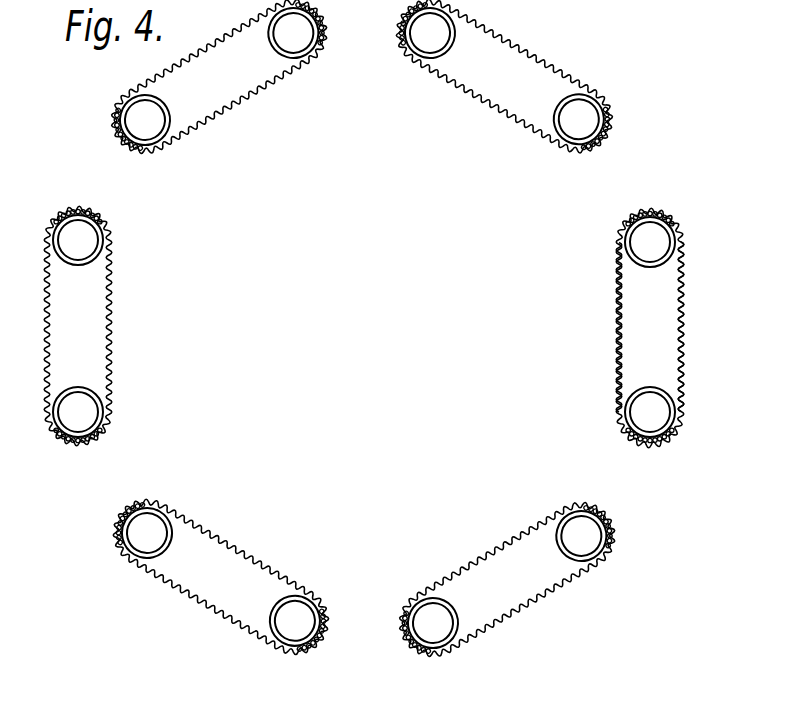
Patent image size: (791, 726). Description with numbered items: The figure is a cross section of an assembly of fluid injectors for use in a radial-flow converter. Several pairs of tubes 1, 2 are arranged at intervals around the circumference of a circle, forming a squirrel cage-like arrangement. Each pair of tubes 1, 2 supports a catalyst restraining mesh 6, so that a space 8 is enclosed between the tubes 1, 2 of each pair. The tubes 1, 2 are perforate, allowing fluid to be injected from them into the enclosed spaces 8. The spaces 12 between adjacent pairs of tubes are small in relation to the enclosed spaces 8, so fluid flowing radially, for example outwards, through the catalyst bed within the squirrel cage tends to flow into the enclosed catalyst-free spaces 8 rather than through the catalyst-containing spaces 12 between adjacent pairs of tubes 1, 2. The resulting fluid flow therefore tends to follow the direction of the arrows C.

The tube 1 is at (625, 256).
The tube 2 is at (668, 392).
The catalyst restraining mesh 6 is at (677, 357).
The enclosed space 8 is at (666, 303).
The space between adjacent pairs of tubes 12 is at (643, 157).
The arrows indicating fluid flow direction C is at (640, 273).